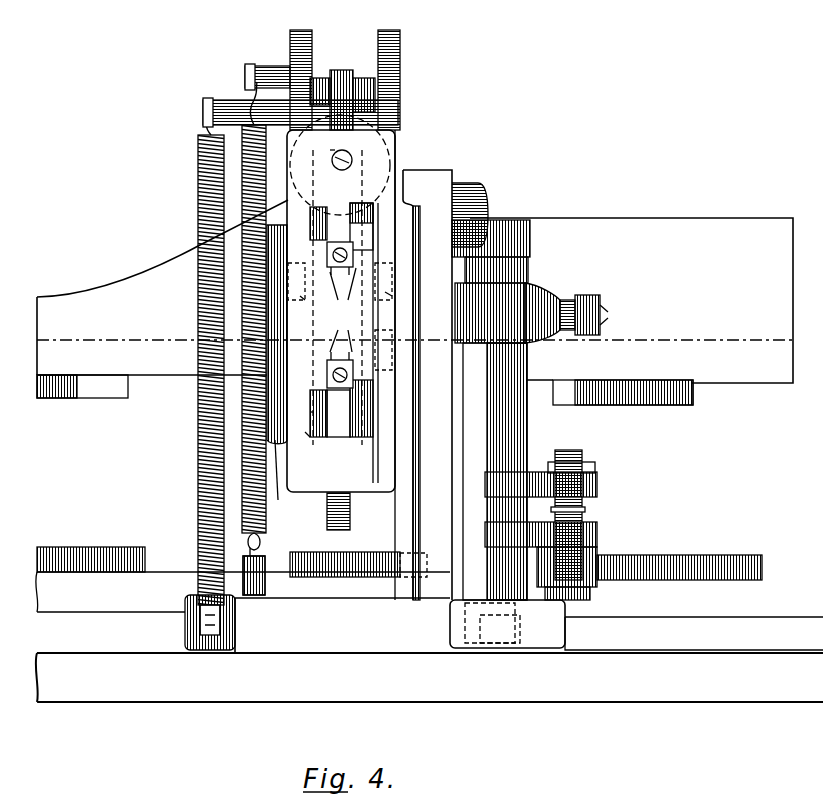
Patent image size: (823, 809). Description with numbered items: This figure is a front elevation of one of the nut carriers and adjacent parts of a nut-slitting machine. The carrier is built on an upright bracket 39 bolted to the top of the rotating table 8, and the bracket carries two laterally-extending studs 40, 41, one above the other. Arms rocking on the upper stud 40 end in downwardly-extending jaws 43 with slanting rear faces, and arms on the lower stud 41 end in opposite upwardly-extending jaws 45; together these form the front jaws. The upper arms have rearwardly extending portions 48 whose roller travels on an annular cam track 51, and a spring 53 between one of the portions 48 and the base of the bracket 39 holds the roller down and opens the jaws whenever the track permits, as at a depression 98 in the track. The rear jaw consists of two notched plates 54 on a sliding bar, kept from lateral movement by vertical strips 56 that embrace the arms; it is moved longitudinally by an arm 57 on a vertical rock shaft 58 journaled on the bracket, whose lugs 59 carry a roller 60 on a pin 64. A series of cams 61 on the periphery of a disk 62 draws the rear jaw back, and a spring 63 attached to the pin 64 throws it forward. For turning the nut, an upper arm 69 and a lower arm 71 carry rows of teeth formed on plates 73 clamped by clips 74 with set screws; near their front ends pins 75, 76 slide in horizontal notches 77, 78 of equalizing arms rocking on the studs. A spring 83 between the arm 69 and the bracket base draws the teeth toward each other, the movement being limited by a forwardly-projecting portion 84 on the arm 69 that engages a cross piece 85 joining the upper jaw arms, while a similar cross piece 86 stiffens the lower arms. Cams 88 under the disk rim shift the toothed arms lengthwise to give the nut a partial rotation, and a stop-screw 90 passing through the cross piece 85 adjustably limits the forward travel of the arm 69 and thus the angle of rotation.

The table 8 is at (429, 677).
The upright bracket 39 is at (317, 624).
The stud 40 is at (273, 215).
The stud 41 is at (277, 483).
The jaw 43 is at (300, 296).
The jaw 45 is at (404, 343).
The rearwardly extending portion 48 is at (378, 52).
The cam track 51 is at (631, 300).
The spring 53 is at (243, 164).
The plate 54 is at (292, 306).
The vertical strip 56 is at (270, 272).
The arm 57 is at (455, 318).
The rock shaft 58 is at (527, 426).
The lug 59 is at (597, 487).
The roller 60 is at (600, 582).
The cam 61 is at (128, 552).
The disk 62 is at (429, 611).
The spring 63 is at (585, 510).
The pin 64 is at (585, 531).
The arm 69 is at (345, 243).
The arm 71 is at (326, 518).
The plate 73 is at (343, 310).
The clip 74 is at (338, 268).
The pin 75 is at (322, 146).
The pin 76 is at (305, 432).
The notch 77 is at (312, 230).
The notch 78 is at (310, 412).
The spring 83 is at (262, 206).
The forwardly-projecting portion 84 is at (375, 98).
The cross piece 85 is at (372, 150).
The cross piece 86 is at (374, 490).
The cam 88 is at (124, 398).
The stop-screw 90 is at (355, 160).
The depression 98 is at (80, 297).